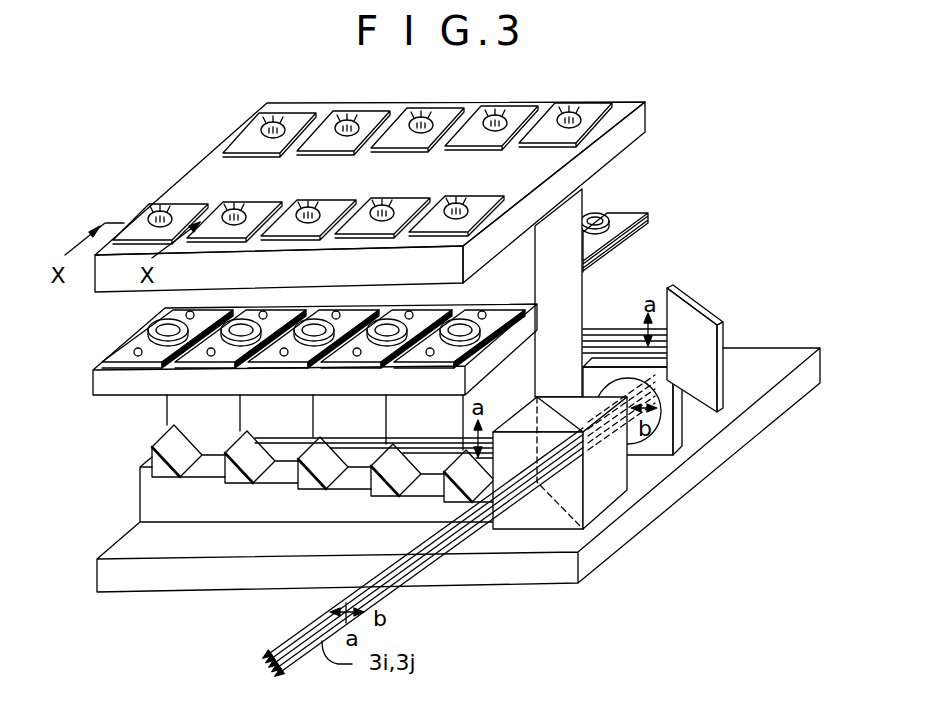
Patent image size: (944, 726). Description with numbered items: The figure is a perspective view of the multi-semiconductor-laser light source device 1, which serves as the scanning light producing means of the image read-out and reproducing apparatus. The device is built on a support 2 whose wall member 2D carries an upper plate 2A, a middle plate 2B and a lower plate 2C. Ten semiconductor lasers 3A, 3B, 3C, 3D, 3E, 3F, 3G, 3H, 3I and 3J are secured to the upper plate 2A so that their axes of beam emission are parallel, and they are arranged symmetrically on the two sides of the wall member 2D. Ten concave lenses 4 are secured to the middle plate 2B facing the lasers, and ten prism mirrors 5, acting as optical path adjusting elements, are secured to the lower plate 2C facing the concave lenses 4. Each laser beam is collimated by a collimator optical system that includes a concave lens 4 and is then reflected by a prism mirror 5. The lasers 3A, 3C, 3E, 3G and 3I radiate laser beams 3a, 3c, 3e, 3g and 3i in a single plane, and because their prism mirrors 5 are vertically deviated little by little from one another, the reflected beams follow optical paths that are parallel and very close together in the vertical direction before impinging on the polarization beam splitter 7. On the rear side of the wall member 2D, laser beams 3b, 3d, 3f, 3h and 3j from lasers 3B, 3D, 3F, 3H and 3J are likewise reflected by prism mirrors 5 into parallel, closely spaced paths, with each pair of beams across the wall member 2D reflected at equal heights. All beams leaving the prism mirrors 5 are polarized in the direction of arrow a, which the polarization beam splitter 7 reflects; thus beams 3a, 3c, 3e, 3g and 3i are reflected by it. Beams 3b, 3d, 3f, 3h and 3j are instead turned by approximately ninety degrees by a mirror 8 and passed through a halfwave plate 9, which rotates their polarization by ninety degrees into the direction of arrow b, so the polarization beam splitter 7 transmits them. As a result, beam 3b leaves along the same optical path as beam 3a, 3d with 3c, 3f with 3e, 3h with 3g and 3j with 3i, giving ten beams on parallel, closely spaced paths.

The multi-semiconductor-laser light source device 1 is at (702, 177).
The support 2 is at (562, 332).
The upper plate 2A is at (640, 128).
The middle plate 2B is at (655, 238).
The lower plate 2C is at (783, 362).
The wall member 2D is at (549, 232).
The semiconductor laser 3A is at (158, 212).
The semiconductor laser 3B is at (280, 124).
The semiconductor laser 3C is at (240, 211).
The semiconductor laser 3D is at (353, 121).
The semiconductor laser 3E is at (314, 209).
The semiconductor laser 3F is at (427, 118).
The semiconductor laser 3G is at (388, 207).
The semiconductor laser 3H is at (501, 116).
The semiconductor laser 3I is at (460, 205).
The semiconductor laser 3J is at (574, 113).
The laser beam 3a is at (172, 311).
The laser beam 3b is at (280, 653).
The laser beam 3c is at (245, 311).
The laser beam 3d is at (310, 642).
The laser beam 3e is at (318, 311).
The laser beam 3f is at (300, 687).
The laser beam 3g is at (390, 311).
The laser beam 3h is at (306, 662).
The laser beam 3i is at (465, 292).
The laser beam 3j is at (603, 213).
The concave lens 4 is at (610, 221).
The prism mirror 5 is at (247, 476).
The polarization beam splitter 7 is at (608, 487).
The mirror 8 is at (720, 383).
The halfwave plate 9 is at (684, 441).